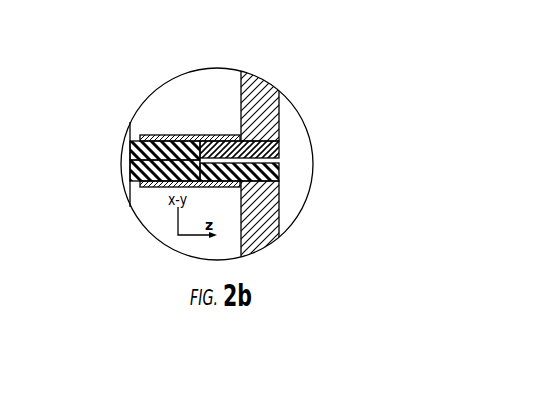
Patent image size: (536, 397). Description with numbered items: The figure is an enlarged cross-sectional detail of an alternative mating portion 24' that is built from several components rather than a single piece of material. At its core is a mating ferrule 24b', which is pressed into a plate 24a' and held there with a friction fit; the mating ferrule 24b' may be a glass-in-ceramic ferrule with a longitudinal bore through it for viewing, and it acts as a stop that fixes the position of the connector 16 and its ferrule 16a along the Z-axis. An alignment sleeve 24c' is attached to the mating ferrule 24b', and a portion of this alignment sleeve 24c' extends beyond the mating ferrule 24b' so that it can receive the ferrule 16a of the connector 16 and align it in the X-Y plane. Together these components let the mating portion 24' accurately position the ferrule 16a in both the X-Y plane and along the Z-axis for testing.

The mating portion 24' is at (217, 159).
The plate 24a' is at (296, 165).
The mating ferrule 24b' is at (285, 159).
The alignment sleeve 24c' is at (152, 103).
The connector 16 is at (129, 158).
The connector ferrule 16a is at (142, 187).